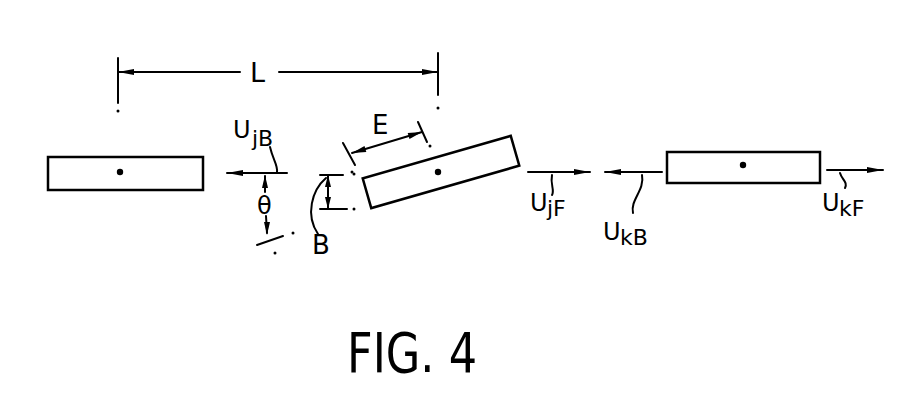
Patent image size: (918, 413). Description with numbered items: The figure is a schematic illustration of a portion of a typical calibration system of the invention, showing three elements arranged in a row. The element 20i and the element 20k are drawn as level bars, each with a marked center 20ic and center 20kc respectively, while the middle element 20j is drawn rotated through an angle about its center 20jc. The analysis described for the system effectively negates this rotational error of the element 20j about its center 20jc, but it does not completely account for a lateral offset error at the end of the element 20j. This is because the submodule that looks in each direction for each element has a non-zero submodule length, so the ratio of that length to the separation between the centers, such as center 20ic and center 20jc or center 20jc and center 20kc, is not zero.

The element 20i is at (148, 192).
The center of element 20ic is at (120, 172).
The element 20j is at (427, 197).
The center of element 20jc is at (438, 172).
The element 20k is at (705, 185).
The center of element 20kc is at (743, 165).